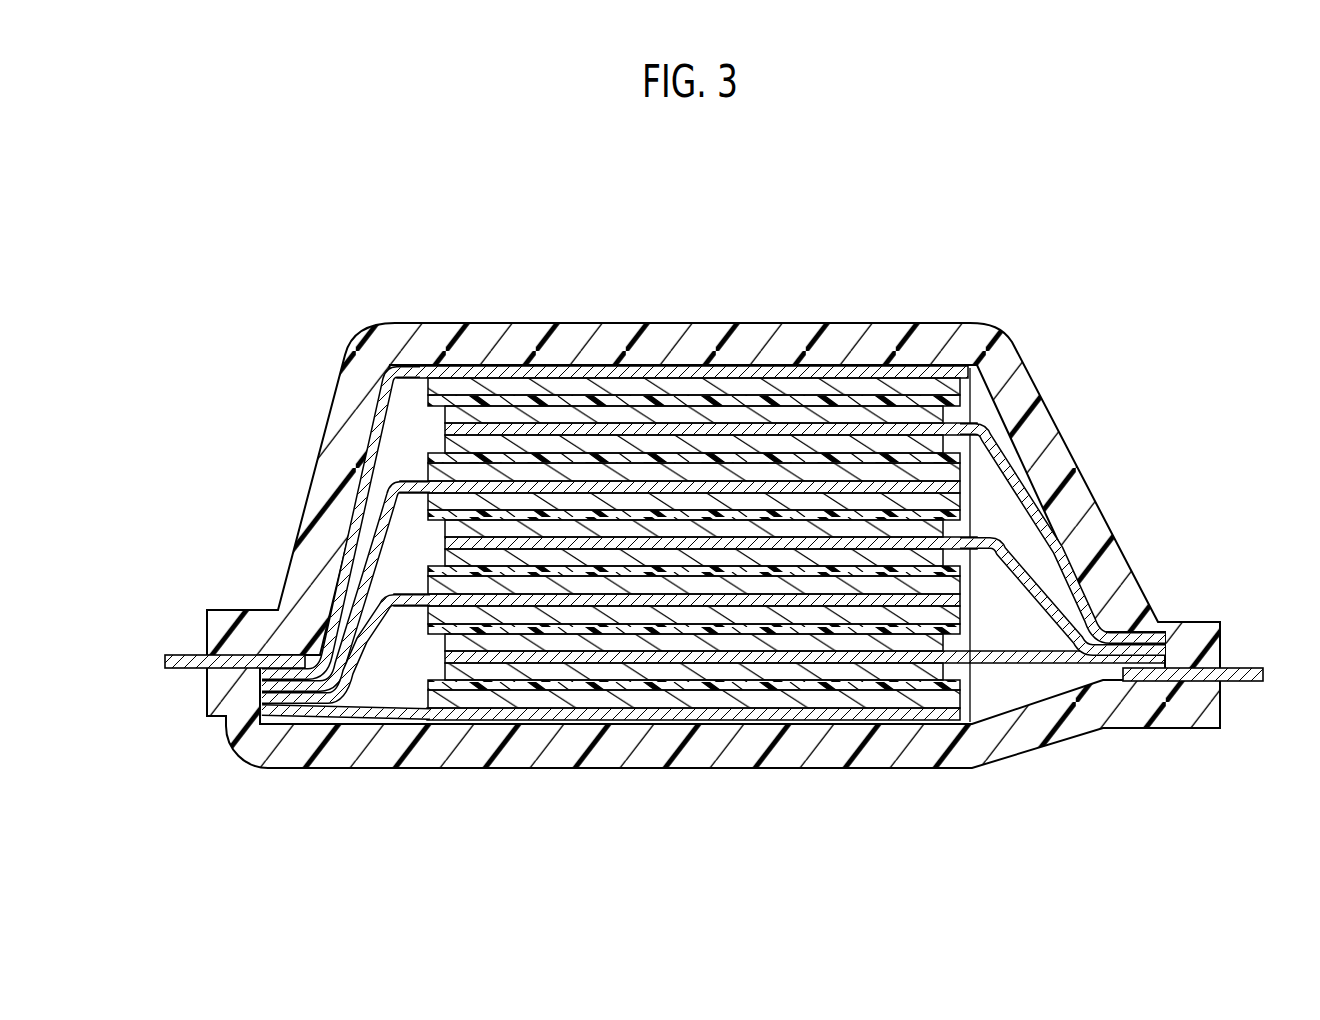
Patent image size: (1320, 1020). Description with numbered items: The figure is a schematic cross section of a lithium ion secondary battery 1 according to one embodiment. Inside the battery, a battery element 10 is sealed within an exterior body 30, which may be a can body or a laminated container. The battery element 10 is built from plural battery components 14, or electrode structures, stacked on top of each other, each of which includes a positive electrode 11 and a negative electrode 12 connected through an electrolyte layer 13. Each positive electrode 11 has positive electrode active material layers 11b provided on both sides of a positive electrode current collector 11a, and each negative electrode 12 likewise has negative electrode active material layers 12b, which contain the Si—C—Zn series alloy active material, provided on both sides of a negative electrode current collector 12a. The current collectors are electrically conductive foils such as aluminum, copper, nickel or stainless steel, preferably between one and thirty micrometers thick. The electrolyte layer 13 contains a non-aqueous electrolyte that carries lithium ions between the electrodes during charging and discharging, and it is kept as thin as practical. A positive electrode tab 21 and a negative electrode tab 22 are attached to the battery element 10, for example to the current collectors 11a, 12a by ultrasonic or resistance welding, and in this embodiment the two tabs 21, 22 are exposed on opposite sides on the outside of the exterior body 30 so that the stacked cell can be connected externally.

The lithium ion secondary battery 1 is at (298, 296).
The battery element 10 is at (713, 465).
The positive electrode 11 is at (805, 444).
The positive electrode current collector 11a is at (705, 428).
The positive electrode active material layer 11b is at (592, 412).
The negative electrode 12 is at (615, 464).
The negative electrode current collector 12a is at (866, 488).
The negative electrode active material layer 12b is at (488, 388).
The electrolyte layer 13 is at (540, 400).
The battery component 14 is at (694, 449).
The positive electrode tab 21 is at (1236, 668).
The negative electrode tab 22 is at (185, 655).
The exterior body 30 is at (1200, 620).